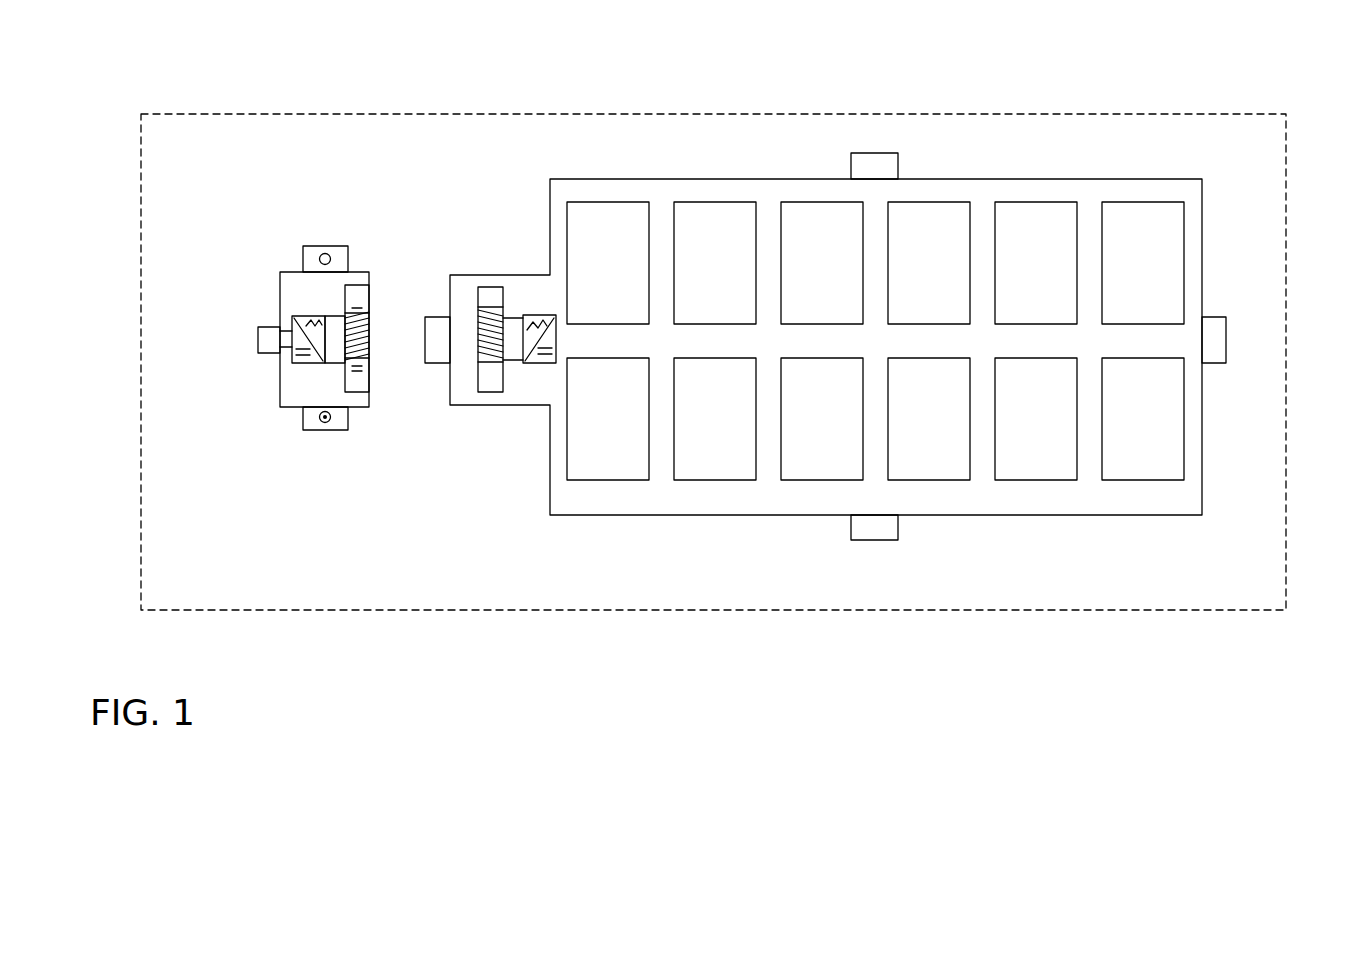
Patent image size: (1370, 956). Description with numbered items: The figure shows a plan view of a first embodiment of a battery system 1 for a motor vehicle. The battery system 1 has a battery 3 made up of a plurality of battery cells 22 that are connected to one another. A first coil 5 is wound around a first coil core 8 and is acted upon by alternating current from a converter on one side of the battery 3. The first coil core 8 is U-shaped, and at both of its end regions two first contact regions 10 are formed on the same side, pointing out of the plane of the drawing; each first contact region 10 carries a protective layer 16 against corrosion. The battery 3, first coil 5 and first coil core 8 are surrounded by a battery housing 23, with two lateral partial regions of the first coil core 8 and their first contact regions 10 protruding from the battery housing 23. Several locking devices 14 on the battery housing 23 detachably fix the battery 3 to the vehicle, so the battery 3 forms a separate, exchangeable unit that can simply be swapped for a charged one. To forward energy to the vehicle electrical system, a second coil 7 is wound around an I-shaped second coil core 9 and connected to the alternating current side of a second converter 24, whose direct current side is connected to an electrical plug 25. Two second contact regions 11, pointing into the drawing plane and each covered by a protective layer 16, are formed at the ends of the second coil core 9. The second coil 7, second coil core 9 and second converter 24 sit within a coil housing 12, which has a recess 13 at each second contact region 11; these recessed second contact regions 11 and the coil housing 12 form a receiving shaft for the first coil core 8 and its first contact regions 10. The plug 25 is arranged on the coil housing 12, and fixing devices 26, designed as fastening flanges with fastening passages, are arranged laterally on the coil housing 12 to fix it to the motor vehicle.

The battery system 1 is at (441, 100).
The battery 3 is at (881, 360).
The first coil 5 is at (491, 320).
The second coil 7 is at (357, 335).
The first coil core 8 is at (478, 418).
The second coil core 9 is at (356, 414).
The first contact region 10 is at (494, 293).
The second contact region 11 is at (362, 297).
The coil housing 12 is at (334, 342).
The recess 13 is at (325, 382).
The locking device 14 is at (872, 164).
The protective layer 16 is at (355, 268).
The battery cell 22 is at (1033, 218).
The battery housing 23 is at (656, 162).
The second converter 24 is at (303, 323).
The electrical plug 25 is at (268, 338).
The fixing device 26 is at (320, 421).